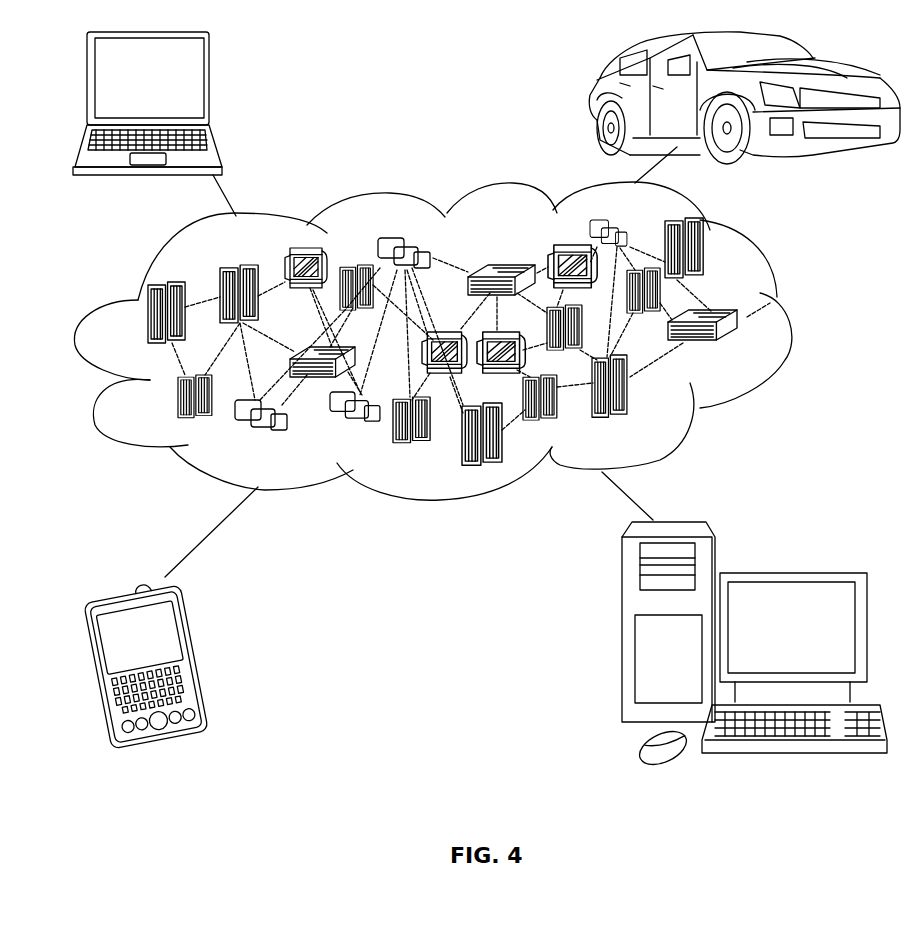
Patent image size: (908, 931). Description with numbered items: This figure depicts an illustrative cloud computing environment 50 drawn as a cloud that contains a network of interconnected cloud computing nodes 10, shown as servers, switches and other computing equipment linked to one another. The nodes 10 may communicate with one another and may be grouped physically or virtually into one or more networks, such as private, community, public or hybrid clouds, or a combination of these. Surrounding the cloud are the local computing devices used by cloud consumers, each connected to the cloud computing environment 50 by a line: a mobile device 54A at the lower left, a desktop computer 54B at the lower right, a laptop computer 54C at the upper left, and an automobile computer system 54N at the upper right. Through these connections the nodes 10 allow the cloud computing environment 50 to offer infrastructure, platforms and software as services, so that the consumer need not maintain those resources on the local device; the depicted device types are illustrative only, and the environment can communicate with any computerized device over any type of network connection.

The cloud computing node 10 is at (740, 350).
The cloud computing environment 50 is at (782, 324).
The mobile device 54A is at (198, 652).
The desktop computer 54B is at (790, 572).
The laptop computer 54C is at (213, 90).
The automobile computer system 54N is at (597, 105).